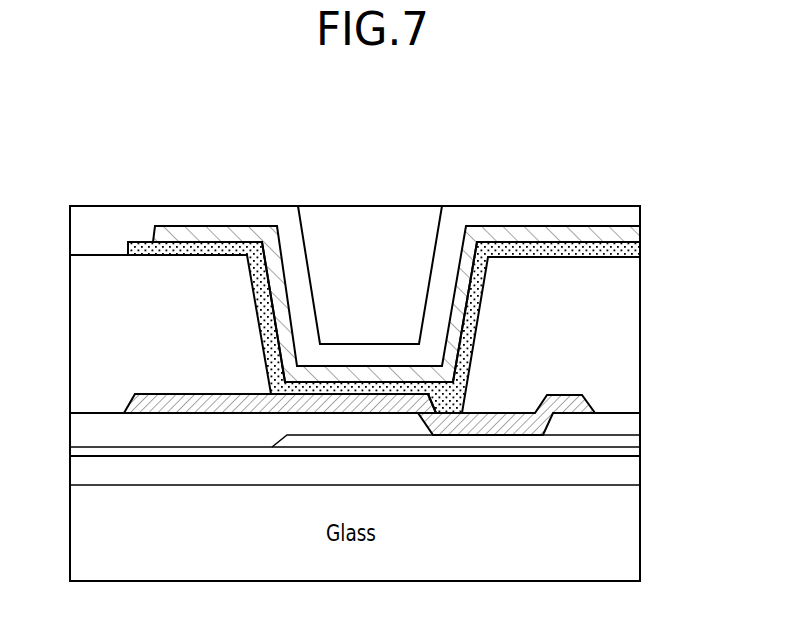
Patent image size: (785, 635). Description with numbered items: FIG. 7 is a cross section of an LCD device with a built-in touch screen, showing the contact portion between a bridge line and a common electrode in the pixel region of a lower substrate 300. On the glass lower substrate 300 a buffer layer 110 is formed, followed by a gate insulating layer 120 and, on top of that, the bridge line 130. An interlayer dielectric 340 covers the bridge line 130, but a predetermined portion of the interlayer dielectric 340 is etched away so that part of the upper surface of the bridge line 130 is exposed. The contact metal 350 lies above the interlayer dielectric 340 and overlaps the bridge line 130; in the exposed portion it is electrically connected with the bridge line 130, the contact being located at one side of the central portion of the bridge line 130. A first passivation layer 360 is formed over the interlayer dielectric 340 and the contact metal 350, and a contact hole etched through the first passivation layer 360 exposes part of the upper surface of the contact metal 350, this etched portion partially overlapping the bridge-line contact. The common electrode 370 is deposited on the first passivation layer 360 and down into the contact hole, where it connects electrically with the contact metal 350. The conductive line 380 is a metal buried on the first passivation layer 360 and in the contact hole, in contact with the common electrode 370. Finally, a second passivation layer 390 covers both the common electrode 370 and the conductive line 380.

The lower substrate 300 is at (390, 168).
The buffer layer 110 is at (634, 475).
The gate insulating layer 120 is at (634, 450).
The bridge line 130 is at (583, 438).
The interlayer dielectric 340 is at (634, 423).
The contact metal 350 is at (585, 400).
The first passivation layer 360 is at (636, 334).
The common electrode 370 is at (636, 248).
The conductive line 380 is at (593, 228).
The second passivation layer 390 is at (636, 218).